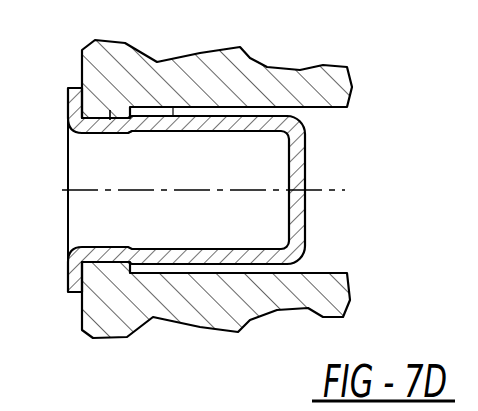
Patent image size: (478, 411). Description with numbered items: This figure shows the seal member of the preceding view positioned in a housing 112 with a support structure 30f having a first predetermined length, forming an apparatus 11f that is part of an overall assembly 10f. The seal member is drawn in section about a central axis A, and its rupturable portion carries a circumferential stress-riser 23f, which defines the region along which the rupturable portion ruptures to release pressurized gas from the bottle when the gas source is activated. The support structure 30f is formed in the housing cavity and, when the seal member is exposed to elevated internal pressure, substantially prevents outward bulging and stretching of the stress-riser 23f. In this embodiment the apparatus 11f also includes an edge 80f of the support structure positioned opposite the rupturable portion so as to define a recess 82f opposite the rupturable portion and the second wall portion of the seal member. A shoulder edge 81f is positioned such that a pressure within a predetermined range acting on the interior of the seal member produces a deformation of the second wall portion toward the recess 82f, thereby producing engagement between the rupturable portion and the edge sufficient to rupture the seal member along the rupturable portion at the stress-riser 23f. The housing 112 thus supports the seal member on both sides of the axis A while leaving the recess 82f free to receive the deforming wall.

The housing 112 is at (247, 55).
The recess 82f is at (277, 115).
The edge 80f is at (127, 131).
The support structure 30f is at (110, 118).
The shoulder edge 81f is at (173, 110).
The stress-riser 23f is at (130, 133).
The axis A is at (328, 190).
The apparatus 11f is at (440, 278).
The assembly 10f is at (9, 275).